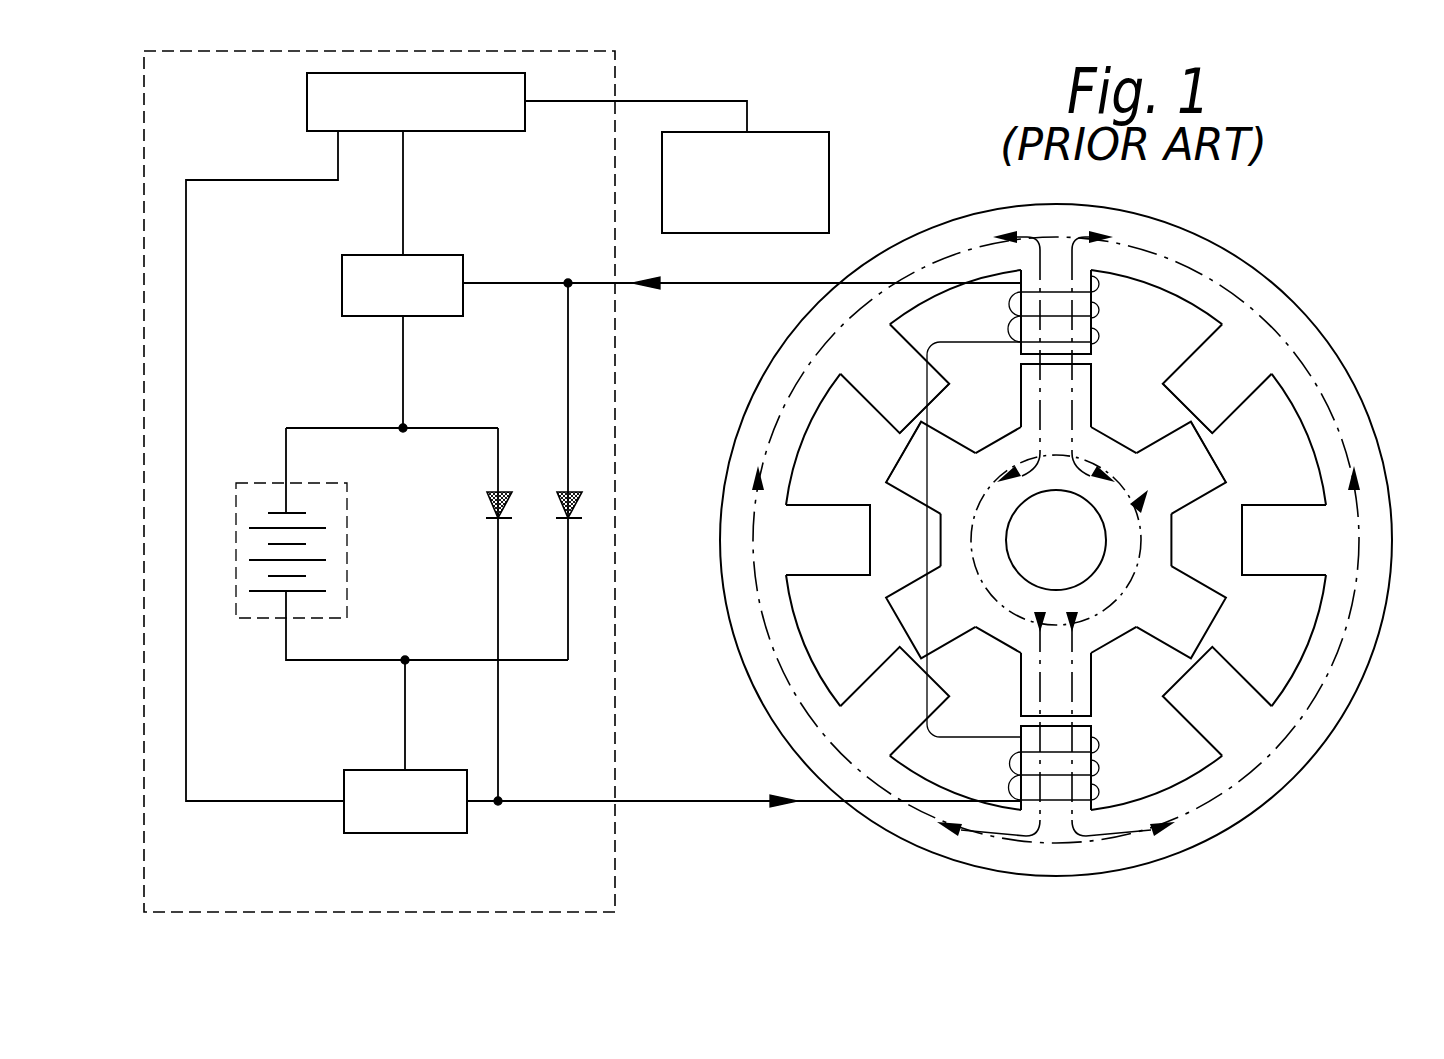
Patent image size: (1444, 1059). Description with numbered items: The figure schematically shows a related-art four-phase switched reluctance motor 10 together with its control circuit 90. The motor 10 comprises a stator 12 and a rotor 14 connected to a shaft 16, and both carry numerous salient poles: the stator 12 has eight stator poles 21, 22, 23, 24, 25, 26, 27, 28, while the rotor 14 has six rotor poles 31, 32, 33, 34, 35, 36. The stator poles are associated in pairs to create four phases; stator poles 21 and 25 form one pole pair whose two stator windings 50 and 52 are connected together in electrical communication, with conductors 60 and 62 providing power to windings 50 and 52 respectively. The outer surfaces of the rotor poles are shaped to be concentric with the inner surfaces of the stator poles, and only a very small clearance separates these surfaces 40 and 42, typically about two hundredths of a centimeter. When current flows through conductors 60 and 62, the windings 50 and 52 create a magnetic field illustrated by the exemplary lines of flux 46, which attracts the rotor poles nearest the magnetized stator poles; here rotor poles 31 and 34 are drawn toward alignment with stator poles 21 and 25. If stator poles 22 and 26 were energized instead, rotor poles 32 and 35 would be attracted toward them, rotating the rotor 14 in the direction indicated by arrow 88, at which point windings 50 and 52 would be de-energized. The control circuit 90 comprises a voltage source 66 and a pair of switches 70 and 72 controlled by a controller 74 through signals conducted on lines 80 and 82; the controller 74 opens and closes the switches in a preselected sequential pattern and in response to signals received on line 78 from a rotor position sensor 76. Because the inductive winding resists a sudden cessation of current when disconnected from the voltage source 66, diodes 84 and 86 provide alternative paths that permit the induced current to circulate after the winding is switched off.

The switched reluctance motor 10 is at (1313, 167).
The stator 12 is at (1250, 264).
The rotor 14 is at (1100, 448).
The shaft 16 is at (1076, 557).
The stator pole 21 is at (1012, 318).
The stator pole 22 is at (1234, 389).
The stator pole 23 is at (1293, 549).
The stator pole 24 is at (1236, 709).
The stator pole 25 is at (1012, 762).
The stator pole 26 is at (929, 704).
The stator pole 27 is at (847, 552).
The stator pole 28 is at (916, 391).
The rotor pole 31 is at (1022, 380).
The rotor pole 32 is at (1206, 451).
The rotor pole 33 is at (1201, 626).
The rotor pole 34 is at (1073, 680).
The rotor pole 35 is at (969, 619).
The rotor pole 36 is at (974, 484).
The stator pole inner surface 40 is at (921, 412).
The rotor pole outer surface 42 is at (896, 452).
The lines of flux 46 is at (778, 668).
The stator winding 50 is at (1098, 312).
The stator winding 52 is at (1098, 745).
The conductor 60 is at (700, 284).
The conductor 62 is at (733, 802).
The voltage source 66 is at (272, 483).
The switch 70 is at (349, 257).
The switch 72 is at (373, 770).
The controller 74 is at (307, 102).
The rotor position sensor 76 is at (829, 170).
The line 78 is at (663, 101).
The line 80 is at (405, 183).
The line 82 is at (187, 240).
The diode 84 is at (488, 502).
The diode 86 is at (557, 492).
The arrow 88 is at (1150, 506).
The control circuit 90 is at (148, 122).